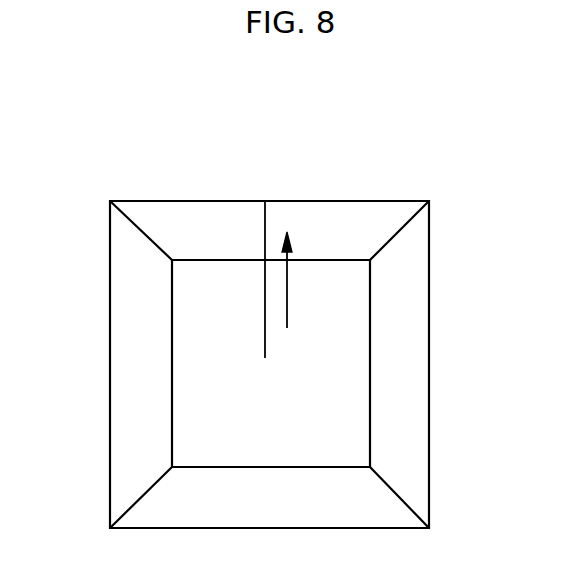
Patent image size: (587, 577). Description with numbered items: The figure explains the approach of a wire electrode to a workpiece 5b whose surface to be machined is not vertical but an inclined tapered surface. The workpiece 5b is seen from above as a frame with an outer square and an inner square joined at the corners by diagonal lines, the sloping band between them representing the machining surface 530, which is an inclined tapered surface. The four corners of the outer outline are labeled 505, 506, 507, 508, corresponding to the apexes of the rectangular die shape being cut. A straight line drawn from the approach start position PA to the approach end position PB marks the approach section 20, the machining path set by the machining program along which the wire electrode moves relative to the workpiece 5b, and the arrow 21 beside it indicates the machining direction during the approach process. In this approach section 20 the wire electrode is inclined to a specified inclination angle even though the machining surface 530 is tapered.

The workpiece 5b is at (345, 198).
The machining surface 530 is at (363, 218).
The corner of optical element 505 is at (433, 201).
The corner of optical element 506 is at (431, 528).
The corner of optical element 507 is at (110, 528).
The corner of optical element 508 is at (110, 201).
The approach section 20 is at (252, 202).
The machining direction during approach process 21 is at (288, 302).